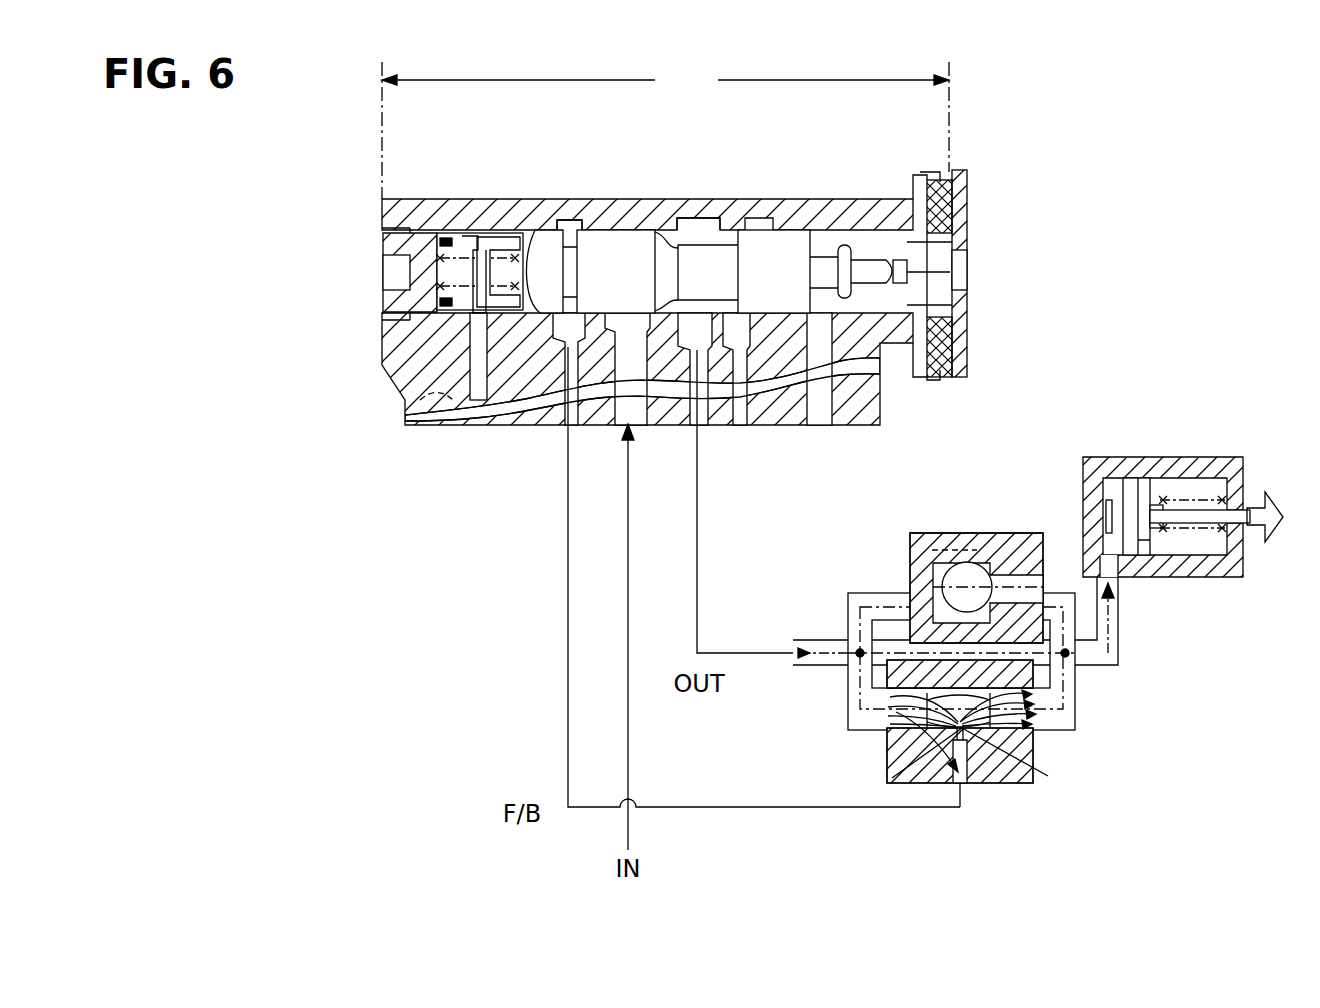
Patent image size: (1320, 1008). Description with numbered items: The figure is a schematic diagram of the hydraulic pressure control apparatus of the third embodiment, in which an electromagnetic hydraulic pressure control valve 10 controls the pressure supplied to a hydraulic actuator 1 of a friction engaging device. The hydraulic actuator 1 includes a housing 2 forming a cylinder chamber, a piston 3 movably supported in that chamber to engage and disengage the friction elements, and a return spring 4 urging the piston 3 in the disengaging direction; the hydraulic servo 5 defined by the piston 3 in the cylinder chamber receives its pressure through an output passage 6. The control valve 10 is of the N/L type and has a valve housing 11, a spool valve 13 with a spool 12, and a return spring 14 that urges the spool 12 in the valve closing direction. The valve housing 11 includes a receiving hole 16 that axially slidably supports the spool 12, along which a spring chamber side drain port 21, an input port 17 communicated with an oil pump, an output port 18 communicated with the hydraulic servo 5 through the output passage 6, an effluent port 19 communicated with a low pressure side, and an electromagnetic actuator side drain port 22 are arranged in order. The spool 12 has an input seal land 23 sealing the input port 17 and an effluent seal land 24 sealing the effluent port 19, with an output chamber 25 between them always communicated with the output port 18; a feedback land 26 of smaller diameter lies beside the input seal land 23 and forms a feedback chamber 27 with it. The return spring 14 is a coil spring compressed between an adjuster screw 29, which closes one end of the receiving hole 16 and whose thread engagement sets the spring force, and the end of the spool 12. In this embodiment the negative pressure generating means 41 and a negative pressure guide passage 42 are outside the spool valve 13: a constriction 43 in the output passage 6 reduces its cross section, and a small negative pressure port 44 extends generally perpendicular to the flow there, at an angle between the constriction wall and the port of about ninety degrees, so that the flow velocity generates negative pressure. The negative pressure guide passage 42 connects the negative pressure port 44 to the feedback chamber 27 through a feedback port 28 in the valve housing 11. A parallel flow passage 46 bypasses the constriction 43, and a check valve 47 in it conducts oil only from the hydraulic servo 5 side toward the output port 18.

The hydraulic actuator 1 is at (1163, 509).
The housing 2 is at (1183, 470).
The piston 3 is at (1132, 495).
The return spring 4 is at (1180, 545).
The hydraulic servo 5 is at (1104, 487).
The output passage 6 is at (697, 573).
The electromagnetic hydraulic pressure control valve 10 is at (400, 442).
The valve housing 11 is at (486, 200).
The spool 12 is at (709, 250).
The spool valve 13 is at (665, 130).
The return spring 14 is at (463, 224).
The receiving hole 16 is at (806, 226).
The input port 17 is at (620, 420).
The output port 18 is at (690, 420).
The effluent port 19 is at (748, 420).
The spring chamber side drain port 21 is at (481, 420).
The electromagnetic actuator side drain port 22 is at (820, 422).
The input seal land 23 is at (625, 235).
The effluent seal land 24 is at (761, 235).
The output chamber 25 is at (690, 218).
The feedback land 26 is at (545, 240).
The feedback chamber 27 is at (570, 216).
The feedback port 28 is at (556, 422).
The adjuster screw 29 is at (385, 238).
The negative pressure generating means 41 is at (971, 759).
The negative pressure guide passage 42 is at (568, 604).
The constriction 43 is at (968, 729).
The negative pressure port 44 is at (964, 731).
The parallel flow passage 46 is at (878, 600).
The check valve 47 is at (968, 572).